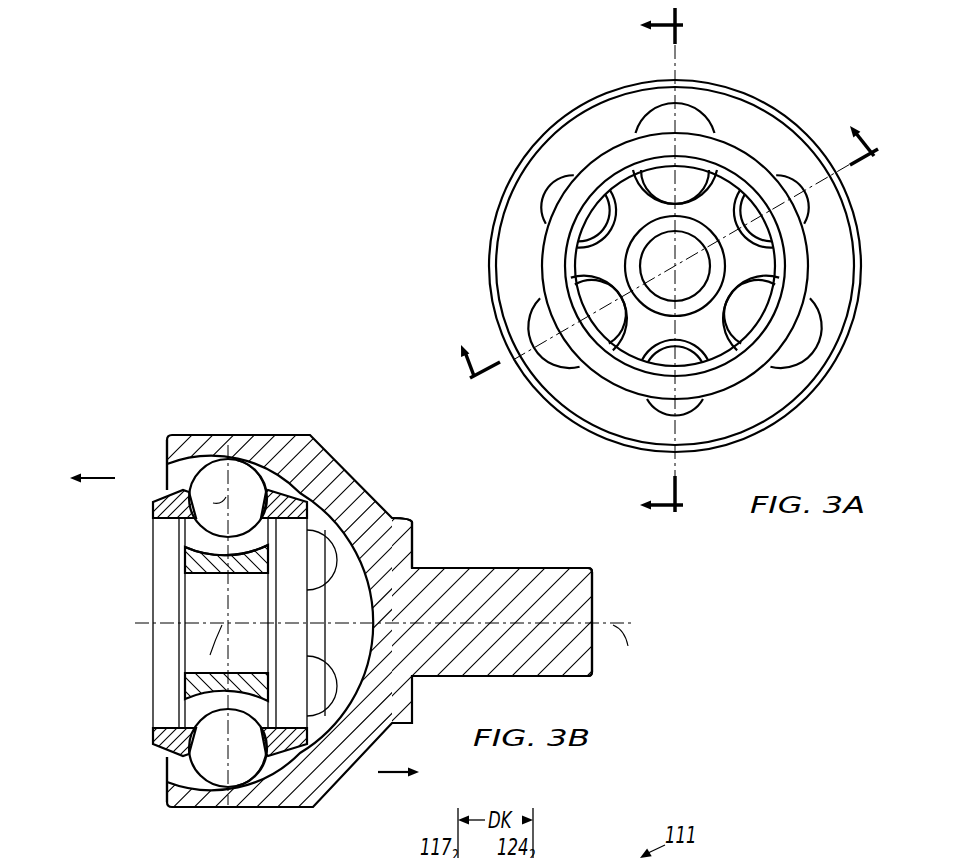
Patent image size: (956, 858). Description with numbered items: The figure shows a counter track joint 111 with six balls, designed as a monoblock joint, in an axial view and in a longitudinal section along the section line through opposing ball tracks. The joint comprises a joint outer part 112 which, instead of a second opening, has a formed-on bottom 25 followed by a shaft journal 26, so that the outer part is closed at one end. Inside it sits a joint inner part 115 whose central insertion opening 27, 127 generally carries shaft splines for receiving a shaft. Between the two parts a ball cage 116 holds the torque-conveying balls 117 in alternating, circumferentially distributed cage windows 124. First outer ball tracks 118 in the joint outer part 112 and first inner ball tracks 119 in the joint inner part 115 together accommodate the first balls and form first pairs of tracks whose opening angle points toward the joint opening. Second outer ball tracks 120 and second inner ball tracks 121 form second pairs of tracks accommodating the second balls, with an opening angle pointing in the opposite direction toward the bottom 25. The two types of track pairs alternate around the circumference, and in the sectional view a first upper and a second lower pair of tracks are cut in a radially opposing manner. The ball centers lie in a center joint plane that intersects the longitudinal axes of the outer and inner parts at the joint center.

In FIG. 3A, the universal joint 111 is at (666, 263).
In FIG. 3B, the universal joint 111 is at (478, 429).
In FIG. 3A, the joint outer part 112 is at (748, 125).
In FIG. 3B, the joint outer part 112 is at (290, 440).
In FIG. 3A, the joint inner part 115 is at (767, 265).
In FIG. 3B, the joint inner part 115 is at (197, 565).
In FIG. 3A, the ball cage 116 is at (730, 375).
In FIG. 3B, the ball cage 116 is at (157, 733).
In FIG. 3A, the torque-conveying balls 117 is at (648, 127).
In FIG. 3B, the torque-conveying balls 117 is at (210, 476).
In FIG. 3B, the first outer ball tracks 118 is at (175, 480).
In FIG. 3B, the first inner ball tracks 119 is at (197, 540).
In FIG. 3B, the second outer ball tracks 120 is at (177, 768).
In FIG. 3B, the second inner ball tracks 121 is at (183, 715).
In FIG. 3B, the cage windows 124 is at (253, 500).
In FIG. 3B, the insertion opening 127 is at (203, 575).
In FIG. 3B, the formed-on bottom 25 is at (400, 538).
In FIG. 3B, the shaft journal 26 is at (545, 580).
In FIG. 3A, the insertion opening 27 is at (628, 261).